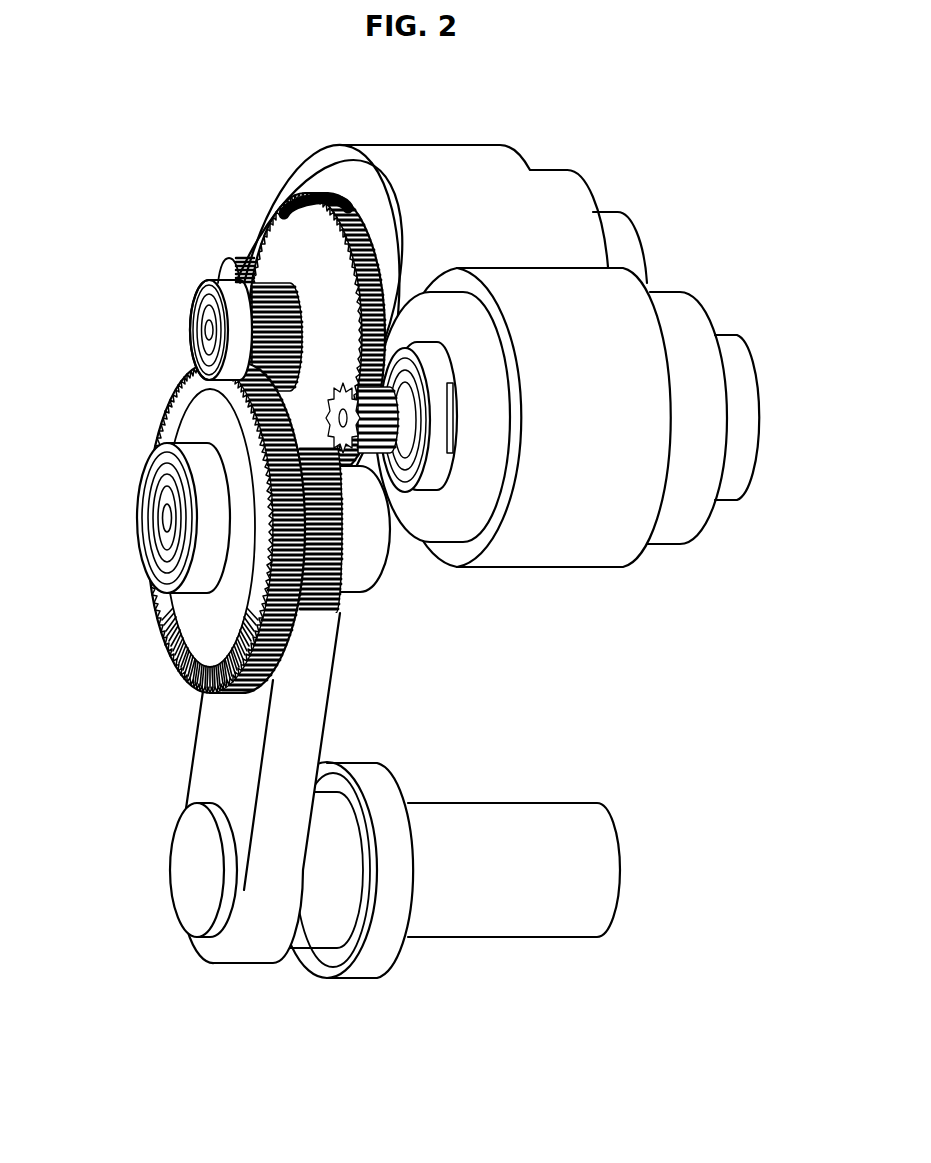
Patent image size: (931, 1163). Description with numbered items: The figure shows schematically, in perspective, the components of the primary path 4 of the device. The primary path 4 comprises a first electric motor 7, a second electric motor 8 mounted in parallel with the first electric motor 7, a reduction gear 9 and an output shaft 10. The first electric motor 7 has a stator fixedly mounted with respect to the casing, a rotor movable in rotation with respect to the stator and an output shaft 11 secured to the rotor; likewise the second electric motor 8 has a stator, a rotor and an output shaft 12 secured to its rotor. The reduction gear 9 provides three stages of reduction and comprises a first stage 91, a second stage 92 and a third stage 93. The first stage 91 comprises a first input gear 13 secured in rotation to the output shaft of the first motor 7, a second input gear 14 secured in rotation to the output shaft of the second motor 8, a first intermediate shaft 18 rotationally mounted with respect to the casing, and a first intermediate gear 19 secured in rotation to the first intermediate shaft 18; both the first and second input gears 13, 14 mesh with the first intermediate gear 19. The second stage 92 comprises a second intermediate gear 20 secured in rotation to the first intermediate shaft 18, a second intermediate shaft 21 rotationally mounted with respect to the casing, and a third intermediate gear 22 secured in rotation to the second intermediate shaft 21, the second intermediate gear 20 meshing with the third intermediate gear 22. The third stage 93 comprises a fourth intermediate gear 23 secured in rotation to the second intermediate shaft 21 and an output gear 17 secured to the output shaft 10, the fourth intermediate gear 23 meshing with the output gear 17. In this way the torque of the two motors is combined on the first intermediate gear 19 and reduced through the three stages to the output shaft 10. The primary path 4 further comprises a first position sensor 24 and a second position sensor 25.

The primary path 4 is at (103, 272).
The first electric motor 7 is at (437, 143).
The second electric motor 8 is at (568, 262).
The reduction gear 9 is at (127, 419).
The output shaft 10 is at (503, 833).
The output shaft 11 is at (213, 283).
The output shaft 12 is at (340, 416).
The first input gear 13 is at (227, 277).
The second input gear 14 is at (377, 437).
The output gear 17 is at (310, 717).
The first intermediate shaft 18 is at (204, 331).
The first intermediate gear 19 is at (338, 215).
The second intermediate gear 20 is at (270, 307).
The second intermediate shaft 21 is at (165, 518).
The third intermediate gear 22 is at (197, 622).
The fourth intermediate gear 23 is at (330, 540).
The first position sensor 24 is at (623, 247).
The second position sensor 25 is at (740, 367).
The first stage 91 is at (244, 234).
The second stage 92 is at (142, 402).
The third stage 93 is at (362, 616).